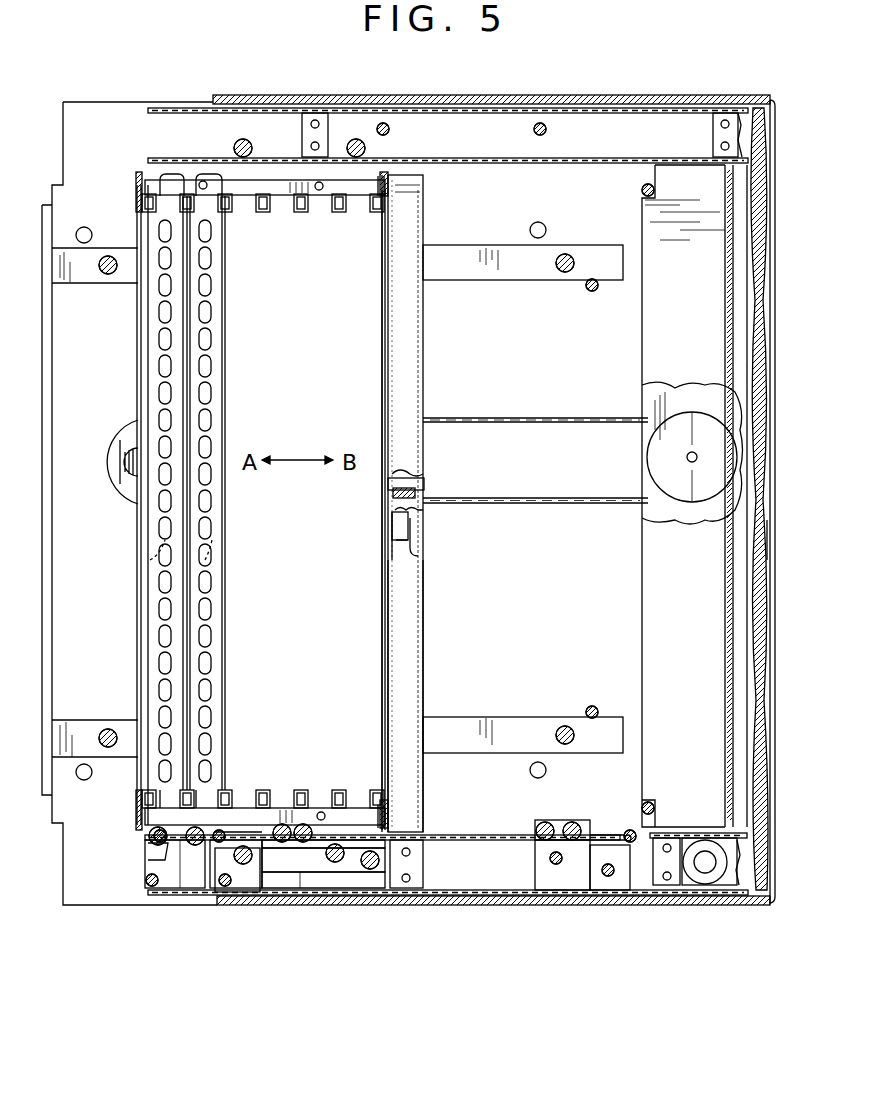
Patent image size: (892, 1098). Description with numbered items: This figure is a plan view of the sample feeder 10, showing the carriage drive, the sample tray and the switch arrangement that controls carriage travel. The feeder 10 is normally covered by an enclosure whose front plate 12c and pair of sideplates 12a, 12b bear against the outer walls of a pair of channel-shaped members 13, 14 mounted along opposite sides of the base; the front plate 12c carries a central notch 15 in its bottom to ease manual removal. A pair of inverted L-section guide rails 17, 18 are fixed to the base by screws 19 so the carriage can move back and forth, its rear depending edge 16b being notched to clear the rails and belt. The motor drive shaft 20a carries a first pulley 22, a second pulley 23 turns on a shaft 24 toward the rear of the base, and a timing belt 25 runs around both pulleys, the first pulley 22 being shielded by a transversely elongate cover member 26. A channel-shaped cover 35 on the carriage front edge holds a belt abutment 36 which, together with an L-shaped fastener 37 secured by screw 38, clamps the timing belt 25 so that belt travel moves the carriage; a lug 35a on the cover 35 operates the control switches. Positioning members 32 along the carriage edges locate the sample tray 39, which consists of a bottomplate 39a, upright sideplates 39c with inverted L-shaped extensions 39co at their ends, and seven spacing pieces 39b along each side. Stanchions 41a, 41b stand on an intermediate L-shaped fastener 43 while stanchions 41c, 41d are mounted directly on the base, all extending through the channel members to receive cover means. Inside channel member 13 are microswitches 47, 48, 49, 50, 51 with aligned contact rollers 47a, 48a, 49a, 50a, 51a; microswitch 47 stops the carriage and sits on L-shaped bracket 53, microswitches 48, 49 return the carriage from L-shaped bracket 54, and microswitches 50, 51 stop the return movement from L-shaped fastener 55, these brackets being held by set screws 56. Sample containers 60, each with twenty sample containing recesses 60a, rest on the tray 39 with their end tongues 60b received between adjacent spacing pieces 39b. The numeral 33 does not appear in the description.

The sample feeder 10 is at (651, 69).
The sideplate 12a is at (452, 898).
The sideplate 12b is at (510, 97).
The front plate 12c is at (765, 388).
The channel-shaped member 13 is at (500, 890).
The channel-shaped member 14 is at (588, 100).
The notch 15 is at (765, 560).
The rear depending edge 16b is at (138, 345).
The guide rail 17 is at (470, 730).
The guide rail 18 is at (472, 260).
The screws 19 is at (106, 272).
The drive shaft 20a is at (687, 458).
The first pulley 22 is at (693, 412).
The second pulley 23 is at (112, 425).
The shaft 24 is at (112, 466).
The timing belt 25 is at (447, 418).
The cover member 26 is at (642, 294).
The positioning members 32 is at (360, 190).
The terminal hole 33 is at (320, 190).
The channel-shaped cover 35 is at (410, 612).
The lug 35a is at (425, 832).
The belt abutment 36 is at (402, 478).
The L-shaped fastener 37 is at (392, 530).
The screw 38 is at (418, 530).
The sample tray 39 is at (340, 400).
The bottomplate 39a is at (368, 357).
The spacing pieces 39b is at (300, 213).
The sideplates 39c is at (138, 540).
The extension 39co is at (138, 182).
The stanchion 41a is at (368, 888).
The stanchion 41b is at (248, 888).
The stanchion 41c is at (356, 148).
The stanchion 41d is at (243, 148).
The intermediate L-shaped fastener 43 is at (325, 875).
The microswitch 47 is at (168, 880).
The contact roller 47a is at (150, 847).
The microswitch 48 is at (210, 880).
The contact roller 48a is at (222, 830).
The microswitch 49 is at (290, 875).
The contact roller 49a is at (228, 830).
The microswitch 50 is at (588, 890).
The contact roller 50a is at (628, 834).
The microswitch 51 is at (632, 888).
The contact roller 51a is at (628, 832).
The L-shaped bracket 53 is at (152, 836).
The L-shaped bracket 54 is at (305, 888).
The L-shaped fastener 55 is at (545, 890).
The set screws 56 is at (283, 824).
The sample container 60 is at (180, 498).
The sample containing recesses 60a is at (160, 558).
The tongues 60b is at (198, 175).